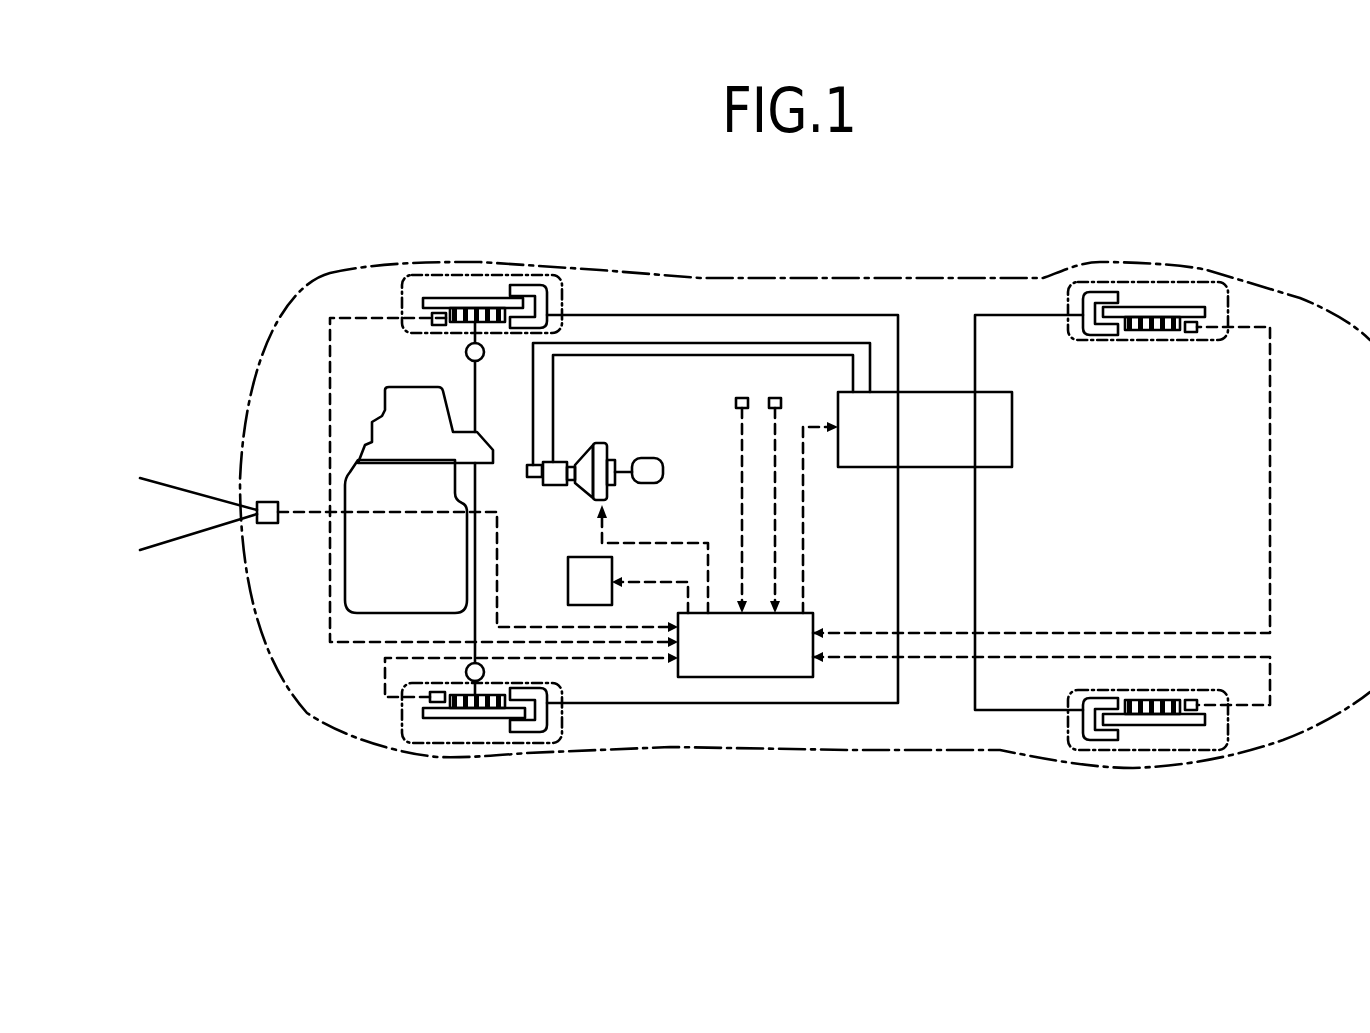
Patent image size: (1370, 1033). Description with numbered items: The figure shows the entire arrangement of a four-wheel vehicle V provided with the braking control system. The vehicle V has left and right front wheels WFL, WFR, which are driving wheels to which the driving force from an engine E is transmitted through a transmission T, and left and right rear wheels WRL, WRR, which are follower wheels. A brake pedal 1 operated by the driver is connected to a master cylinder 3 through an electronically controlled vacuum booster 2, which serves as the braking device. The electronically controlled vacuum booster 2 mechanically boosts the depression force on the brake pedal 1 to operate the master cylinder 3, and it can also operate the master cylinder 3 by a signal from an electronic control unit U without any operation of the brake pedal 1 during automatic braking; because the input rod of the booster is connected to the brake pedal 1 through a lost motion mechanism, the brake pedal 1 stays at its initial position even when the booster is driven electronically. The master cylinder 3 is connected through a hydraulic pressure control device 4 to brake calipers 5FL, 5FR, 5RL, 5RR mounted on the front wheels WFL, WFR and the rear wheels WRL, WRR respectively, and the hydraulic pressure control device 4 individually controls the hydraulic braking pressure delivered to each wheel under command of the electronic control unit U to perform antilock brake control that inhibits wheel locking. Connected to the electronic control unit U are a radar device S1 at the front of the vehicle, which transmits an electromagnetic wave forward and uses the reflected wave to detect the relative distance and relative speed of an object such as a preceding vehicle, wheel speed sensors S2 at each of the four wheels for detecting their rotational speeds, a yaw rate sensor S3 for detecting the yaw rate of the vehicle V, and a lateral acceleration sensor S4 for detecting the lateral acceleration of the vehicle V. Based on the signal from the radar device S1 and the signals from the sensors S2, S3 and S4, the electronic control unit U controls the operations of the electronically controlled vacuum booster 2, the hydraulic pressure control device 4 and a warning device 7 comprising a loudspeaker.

The four-wheel vehicle V is at (813, 236).
The right front wheel WFR is at (447, 270).
The left front wheel WFL is at (452, 747).
The right rear wheel WRR is at (1135, 283).
The left rear wheel WRL is at (1132, 752).
The brake caliper 5FR is at (529, 277).
The brake caliper 5FL is at (536, 746).
The brake caliper 5RR is at (1082, 286).
The brake caliper 5RL is at (1088, 748).
The radar device S1 is at (268, 523).
The wheel speed sensor S2 is at (1204, 790).
The yaw rate sensor S3 is at (740, 398).
The lateral acceleration sensor S4 is at (777, 398).
The transmission T is at (424, 441).
The engine E is at (410, 563).
The brake pedal 1 is at (663, 470).
The electronically controlled vacuum booster 2 is at (597, 498).
The master cylinder 3 is at (531, 485).
The hydraulic pressure control device 4 is at (936, 454).
The electronic control unit U is at (757, 664).
The warning device 7 is at (601, 600).